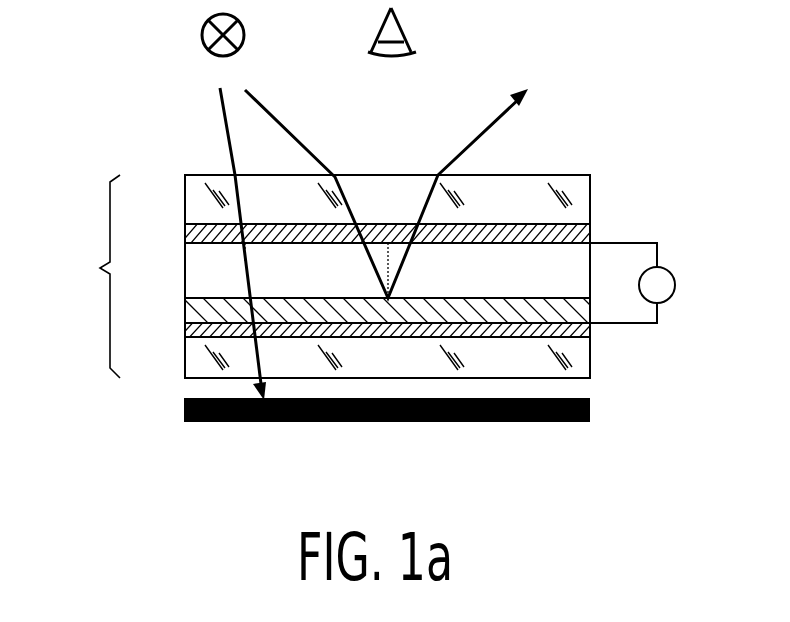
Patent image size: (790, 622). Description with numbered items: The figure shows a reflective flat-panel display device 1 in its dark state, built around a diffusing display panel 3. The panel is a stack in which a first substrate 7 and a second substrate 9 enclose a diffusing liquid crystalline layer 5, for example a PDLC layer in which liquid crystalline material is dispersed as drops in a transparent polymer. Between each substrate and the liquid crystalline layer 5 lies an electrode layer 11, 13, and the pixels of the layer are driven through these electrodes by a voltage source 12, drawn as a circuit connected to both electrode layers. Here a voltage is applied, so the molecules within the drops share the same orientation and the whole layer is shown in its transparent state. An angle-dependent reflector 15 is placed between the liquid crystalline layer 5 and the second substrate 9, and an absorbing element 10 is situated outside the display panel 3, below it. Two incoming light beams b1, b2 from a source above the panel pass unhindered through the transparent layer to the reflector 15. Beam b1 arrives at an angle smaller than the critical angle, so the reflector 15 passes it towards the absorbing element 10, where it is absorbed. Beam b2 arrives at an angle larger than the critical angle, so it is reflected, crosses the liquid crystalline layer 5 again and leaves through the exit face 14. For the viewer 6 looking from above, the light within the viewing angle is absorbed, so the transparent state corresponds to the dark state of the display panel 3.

The flat-panel display device 1 is at (128, 470).
The display panel 3 is at (100, 268).
The liquid crystalline layer 5 is at (580, 263).
The viewer 6 is at (400, 28).
The first substrate 7 is at (582, 192).
The second substrate 9 is at (582, 368).
The absorbing element 10 is at (590, 412).
The electrode layer 11 is at (590, 231).
The voltage source 12 is at (672, 292).
The electrode layer 13 is at (590, 330).
The exit face 14 is at (540, 174).
The angle-dependent reflector 15 is at (200, 306).
The light beam b1 is at (216, 103).
The light beam b2 is at (278, 108).